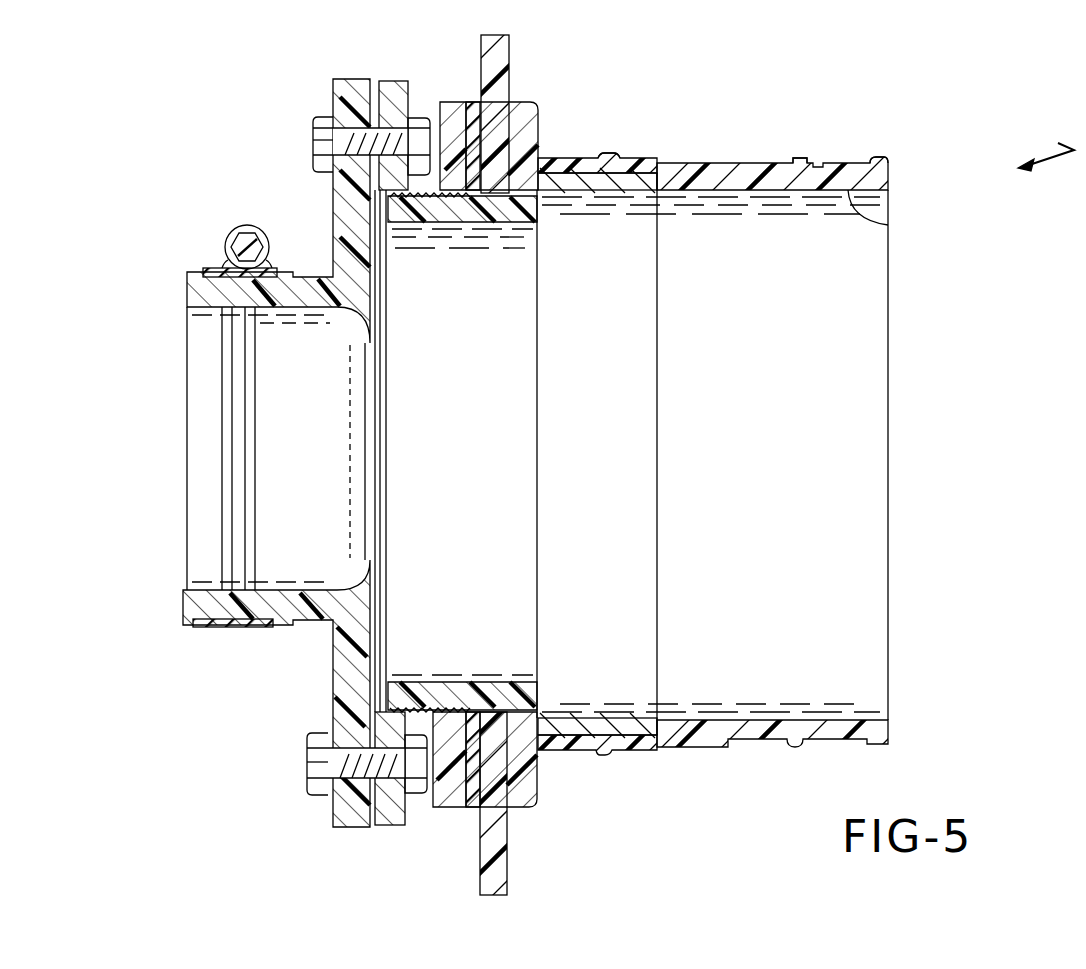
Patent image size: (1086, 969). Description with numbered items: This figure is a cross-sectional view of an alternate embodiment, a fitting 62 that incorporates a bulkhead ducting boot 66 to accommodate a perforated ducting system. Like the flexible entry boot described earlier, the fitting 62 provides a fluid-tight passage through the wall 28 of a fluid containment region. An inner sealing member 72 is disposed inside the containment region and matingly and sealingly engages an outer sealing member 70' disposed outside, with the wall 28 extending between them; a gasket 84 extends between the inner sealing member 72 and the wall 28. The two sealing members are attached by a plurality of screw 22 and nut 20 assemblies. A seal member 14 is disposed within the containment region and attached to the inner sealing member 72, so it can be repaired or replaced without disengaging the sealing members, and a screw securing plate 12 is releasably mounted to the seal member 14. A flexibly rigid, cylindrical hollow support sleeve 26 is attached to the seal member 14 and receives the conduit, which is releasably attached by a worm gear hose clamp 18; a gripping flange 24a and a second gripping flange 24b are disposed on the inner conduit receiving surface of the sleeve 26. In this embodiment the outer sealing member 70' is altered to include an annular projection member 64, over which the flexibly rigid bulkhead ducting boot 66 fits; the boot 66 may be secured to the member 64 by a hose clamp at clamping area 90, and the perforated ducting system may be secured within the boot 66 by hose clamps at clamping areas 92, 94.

The screw securing plate 12 is at (337, 82).
The seal member 14 is at (343, 827).
The worm gear hose clamp 18 is at (222, 231).
The nut 20 is at (415, 118).
The screw 22 is at (317, 111).
The gripping flange 24a is at (258, 393).
The second gripping flange 24b is at (223, 467).
The hollow support sleeve 26 is at (280, 633).
The wall 28 is at (508, 52).
The fitting 62 is at (1039, 137).
The annular projection member 64 is at (580, 710).
The bulkhead ducting boot 66 is at (888, 225).
The outer sealing member 70' is at (525, 772).
The inner sealing member 72 is at (390, 825).
The gasket 84 is at (467, 810).
The clamping area 90 is at (567, 158).
The clamping area 92 is at (743, 163).
The clamping area 94 is at (827, 163).